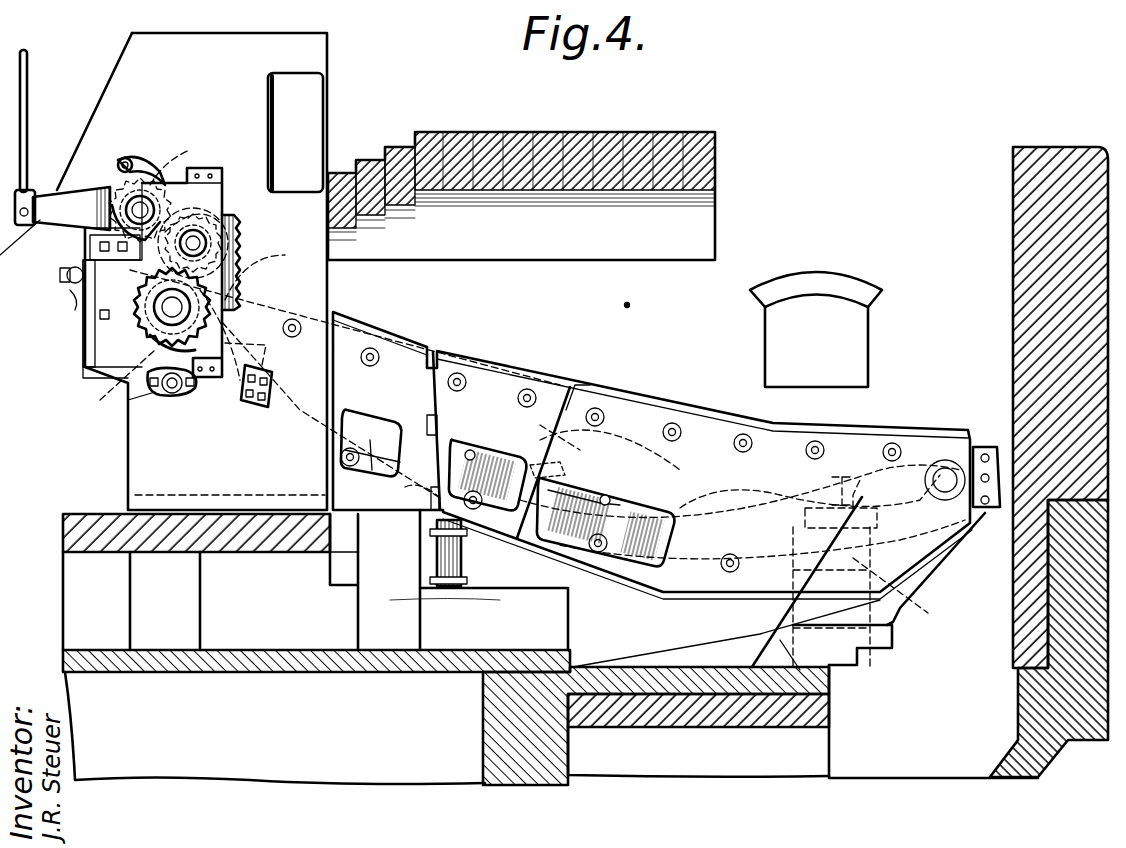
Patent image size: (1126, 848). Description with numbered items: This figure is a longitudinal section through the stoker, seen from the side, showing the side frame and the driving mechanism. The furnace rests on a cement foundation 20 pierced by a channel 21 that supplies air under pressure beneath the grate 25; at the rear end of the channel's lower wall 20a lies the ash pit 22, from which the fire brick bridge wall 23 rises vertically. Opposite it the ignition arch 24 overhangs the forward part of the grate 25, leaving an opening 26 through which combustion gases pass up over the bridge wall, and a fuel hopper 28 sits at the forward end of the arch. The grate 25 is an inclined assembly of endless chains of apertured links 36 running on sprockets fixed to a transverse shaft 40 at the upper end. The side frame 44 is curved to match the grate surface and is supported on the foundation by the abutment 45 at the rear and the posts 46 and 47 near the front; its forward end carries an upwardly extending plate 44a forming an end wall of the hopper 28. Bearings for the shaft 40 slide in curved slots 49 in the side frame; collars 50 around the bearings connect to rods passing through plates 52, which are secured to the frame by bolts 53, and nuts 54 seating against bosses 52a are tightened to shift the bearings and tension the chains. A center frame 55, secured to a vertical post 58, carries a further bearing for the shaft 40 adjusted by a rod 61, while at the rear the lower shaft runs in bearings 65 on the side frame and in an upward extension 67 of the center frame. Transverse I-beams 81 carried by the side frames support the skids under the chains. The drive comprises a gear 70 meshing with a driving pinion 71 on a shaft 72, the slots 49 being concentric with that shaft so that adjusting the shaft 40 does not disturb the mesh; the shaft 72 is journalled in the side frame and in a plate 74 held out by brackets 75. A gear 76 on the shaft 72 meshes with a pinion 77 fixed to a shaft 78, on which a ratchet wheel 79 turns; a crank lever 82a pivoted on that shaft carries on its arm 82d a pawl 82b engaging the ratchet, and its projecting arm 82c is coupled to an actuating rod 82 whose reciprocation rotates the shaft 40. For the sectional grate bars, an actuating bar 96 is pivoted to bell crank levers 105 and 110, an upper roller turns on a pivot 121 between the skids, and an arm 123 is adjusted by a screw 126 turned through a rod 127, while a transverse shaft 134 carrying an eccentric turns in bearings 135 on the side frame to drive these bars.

The foundation 20 is at (103, 555).
The lower wall of the channel 20a is at (680, 697).
The channel 21 is at (279, 601).
The ash pit 22 is at (933, 721).
The bridge wall 23 is at (1012, 260).
The ignition arch 24 is at (710, 158).
The grate 25 is at (558, 360).
The opening 26 is at (816, 290).
The fuel hopper 28 is at (115, 65).
The links 36 is at (995, 445).
The transverse shaft 40 is at (170, 320).
The side frames 44 is at (128, 462).
The upwardly extending plates 44a is at (281, 60).
The abutment 45 is at (825, 650).
The post or abutment 46 is at (479, 619).
The post or abutment 47 is at (150, 627).
The longitudinal curved slots 49 is at (243, 388).
The collars 50 is at (113, 382).
The plates 52 is at (82, 320).
The bosses 52a is at (72, 300).
The bolts 53 is at (84, 350).
The nuts 54 is at (62, 276).
The center frame 55 is at (655, 560).
The vertically extending post 58 is at (455, 558).
The rod 61 is at (908, 596).
The bearings 65 is at (928, 470).
The upward extension 67 is at (930, 575).
The gear 70 is at (140, 325).
The driving pinion 71 is at (218, 218).
The shaft 72 is at (200, 243).
The plate 74 is at (225, 262).
The brackets 75 is at (200, 180).
The gear 76 is at (238, 232).
The pinion 77 is at (170, 162).
The shaft 78 is at (122, 200).
The ratchet wheel 79 is at (112, 233).
The I-beams 81 is at (842, 480).
The actuating rod 82 is at (28, 100).
The crank lever 82a is at (52, 186).
The pawl 82b is at (150, 168).
The outwardly projecting arm 82c is at (20, 247).
The arm 82d is at (122, 158).
The actuating bar 96 is at (600, 495).
The bell crank lever 105 is at (640, 505).
The bell crank lever 110 is at (478, 450).
The pivot 121 is at (262, 268).
The transversely extending arm 123 is at (402, 478).
The adjusting screw 126 is at (385, 425).
The rod 127 is at (345, 438).
The shaft 134 is at (172, 395).
The bearings 135 is at (158, 405).